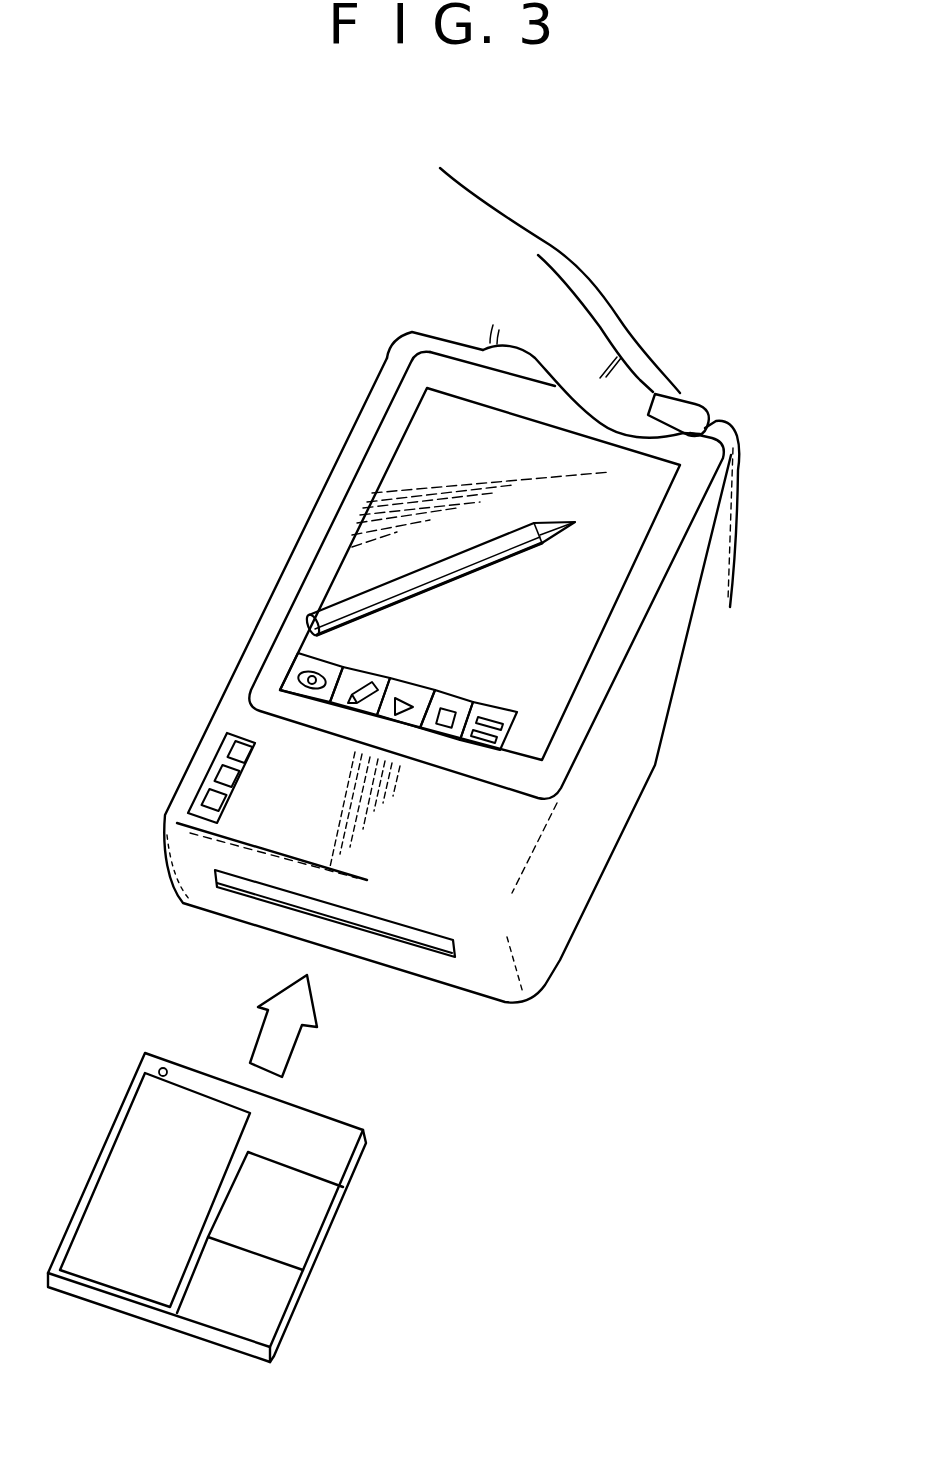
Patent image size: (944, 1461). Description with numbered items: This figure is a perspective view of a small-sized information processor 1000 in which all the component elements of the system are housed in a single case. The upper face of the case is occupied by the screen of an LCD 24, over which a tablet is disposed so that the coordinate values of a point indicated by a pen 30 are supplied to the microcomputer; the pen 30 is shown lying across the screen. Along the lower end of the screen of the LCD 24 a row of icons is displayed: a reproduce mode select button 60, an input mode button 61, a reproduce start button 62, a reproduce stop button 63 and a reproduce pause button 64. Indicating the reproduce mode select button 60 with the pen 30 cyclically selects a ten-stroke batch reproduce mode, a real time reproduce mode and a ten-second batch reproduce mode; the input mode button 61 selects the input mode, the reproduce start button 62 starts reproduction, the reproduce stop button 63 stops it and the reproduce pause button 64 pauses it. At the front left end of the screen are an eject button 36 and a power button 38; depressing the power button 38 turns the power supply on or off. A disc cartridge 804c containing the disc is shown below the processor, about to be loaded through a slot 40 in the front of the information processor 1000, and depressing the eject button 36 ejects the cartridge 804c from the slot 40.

The small-sized information processor 1000 is at (323, 477).
The LCD 24 is at (625, 553).
The pen 30 is at (507, 563).
The eject button 36 is at (222, 768).
The power button 38 is at (210, 803).
The slot 40 is at (408, 942).
The reproduce mode select button 60 is at (290, 668).
The input mode button 61 is at (357, 670).
The reproduce start button 62 is at (412, 682).
The reproduce stop button 63 is at (455, 693).
The reproduce pause button 64 is at (497, 707).
The disc cartridge 804c is at (335, 1157).